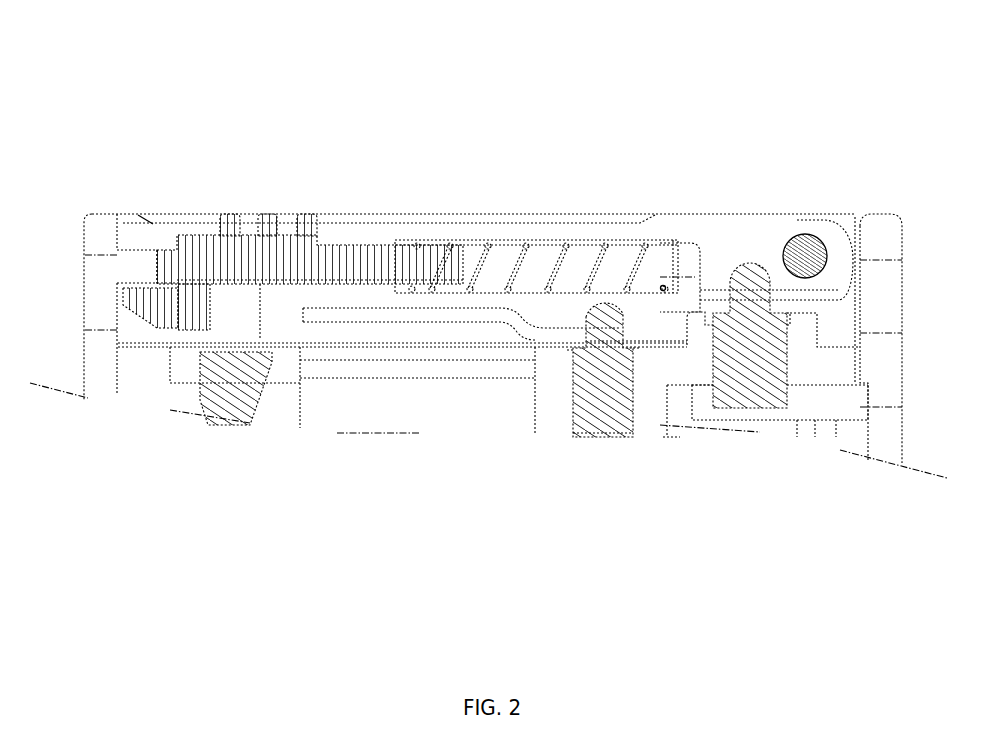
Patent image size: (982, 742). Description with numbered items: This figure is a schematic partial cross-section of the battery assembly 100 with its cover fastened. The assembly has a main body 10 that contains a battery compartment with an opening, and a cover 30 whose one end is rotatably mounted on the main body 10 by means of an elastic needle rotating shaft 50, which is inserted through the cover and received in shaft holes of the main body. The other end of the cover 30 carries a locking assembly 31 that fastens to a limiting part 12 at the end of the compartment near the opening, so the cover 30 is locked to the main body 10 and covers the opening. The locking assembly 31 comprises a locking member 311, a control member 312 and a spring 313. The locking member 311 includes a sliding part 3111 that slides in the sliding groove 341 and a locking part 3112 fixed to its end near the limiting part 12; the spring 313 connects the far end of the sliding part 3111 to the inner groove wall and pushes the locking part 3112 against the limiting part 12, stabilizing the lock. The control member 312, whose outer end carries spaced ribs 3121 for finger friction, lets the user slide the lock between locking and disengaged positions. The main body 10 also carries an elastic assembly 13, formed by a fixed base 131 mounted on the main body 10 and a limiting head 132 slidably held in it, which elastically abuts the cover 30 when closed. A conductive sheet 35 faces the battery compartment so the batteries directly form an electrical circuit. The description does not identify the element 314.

The battery assembly 100 is at (466, 46).
The main body 10 is at (90, 278).
The limiting part 12 is at (128, 268).
The elastic assembly 13 is at (903, 548).
The fixed base 131 is at (750, 347).
The limiting head 132 is at (750, 275).
The cover 30 is at (692, 228).
The locking assembly 31 is at (365, 592).
The locking member 311 is at (210, 552).
The sliding part 3111 is at (246, 262).
The locking part 3112 is at (187, 300).
The control member 312 is at (308, 240).
The ribs 3121 is at (236, 216).
The spring 313 is at (482, 263).
The guide plate 314 is at (427, 266).
The sliding groove 341 is at (535, 270).
The conductive sheet 35 is at (537, 333).
The elastic needle rotating shaft 50 is at (807, 250).